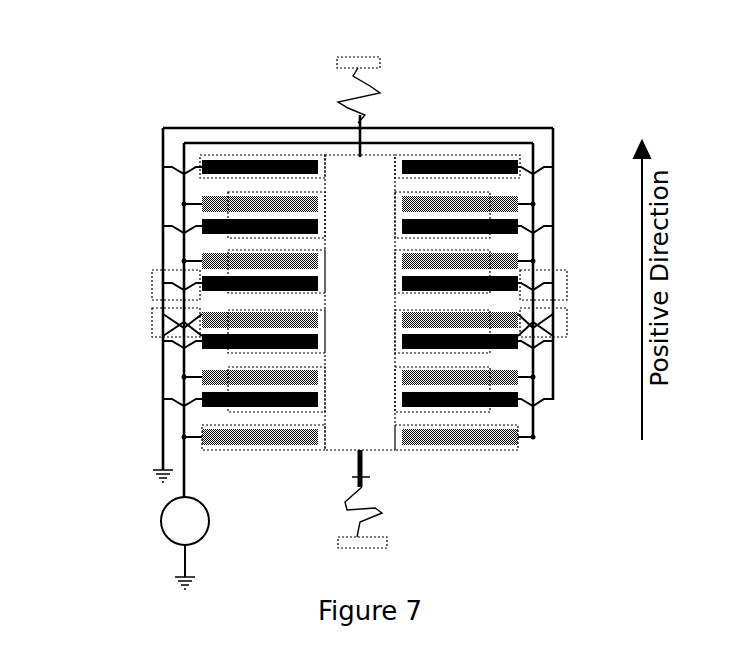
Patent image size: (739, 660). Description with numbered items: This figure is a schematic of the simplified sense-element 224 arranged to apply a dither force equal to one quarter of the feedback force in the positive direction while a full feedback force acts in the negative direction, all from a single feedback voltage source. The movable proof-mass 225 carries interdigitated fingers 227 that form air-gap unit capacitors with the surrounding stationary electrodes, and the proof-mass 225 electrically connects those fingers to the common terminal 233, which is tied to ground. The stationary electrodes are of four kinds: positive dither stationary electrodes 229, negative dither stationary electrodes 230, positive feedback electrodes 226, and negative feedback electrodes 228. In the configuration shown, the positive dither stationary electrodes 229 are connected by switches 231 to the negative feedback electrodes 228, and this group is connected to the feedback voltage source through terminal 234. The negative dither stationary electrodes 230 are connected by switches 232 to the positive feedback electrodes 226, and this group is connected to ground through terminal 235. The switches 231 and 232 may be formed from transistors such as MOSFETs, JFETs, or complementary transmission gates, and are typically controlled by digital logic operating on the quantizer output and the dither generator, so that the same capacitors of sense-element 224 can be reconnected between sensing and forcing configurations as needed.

The sense-element 224 is at (134, 193).
The proof-mass 225 is at (360, 253).
The positive feedback electrodes 226 is at (270, 160).
The interdigitated fingers 227 is at (258, 192).
The negative feedback electrodes 228 is at (233, 208).
The positive dither stationary electrodes 229 is at (498, 272).
The negative dither stationary electrodes 230 is at (517, 350).
The switches 231 is at (150, 275).
The switches 232 is at (150, 318).
The common terminal 233 is at (355, 470).
The terminal 234 is at (190, 462).
The terminal 235 is at (158, 466).